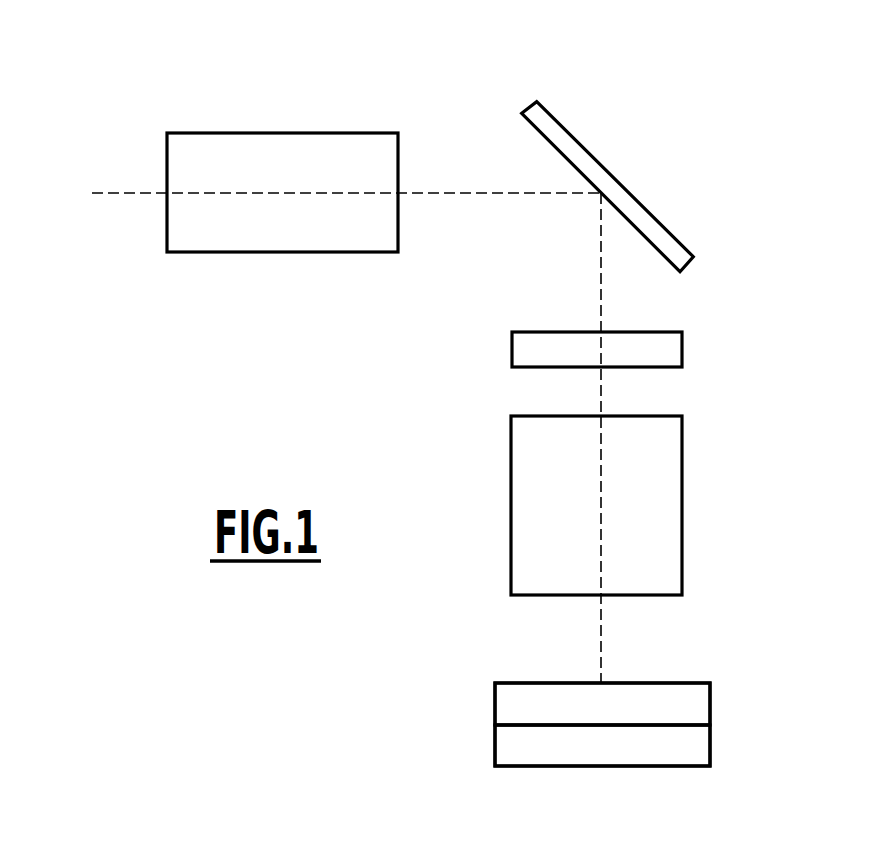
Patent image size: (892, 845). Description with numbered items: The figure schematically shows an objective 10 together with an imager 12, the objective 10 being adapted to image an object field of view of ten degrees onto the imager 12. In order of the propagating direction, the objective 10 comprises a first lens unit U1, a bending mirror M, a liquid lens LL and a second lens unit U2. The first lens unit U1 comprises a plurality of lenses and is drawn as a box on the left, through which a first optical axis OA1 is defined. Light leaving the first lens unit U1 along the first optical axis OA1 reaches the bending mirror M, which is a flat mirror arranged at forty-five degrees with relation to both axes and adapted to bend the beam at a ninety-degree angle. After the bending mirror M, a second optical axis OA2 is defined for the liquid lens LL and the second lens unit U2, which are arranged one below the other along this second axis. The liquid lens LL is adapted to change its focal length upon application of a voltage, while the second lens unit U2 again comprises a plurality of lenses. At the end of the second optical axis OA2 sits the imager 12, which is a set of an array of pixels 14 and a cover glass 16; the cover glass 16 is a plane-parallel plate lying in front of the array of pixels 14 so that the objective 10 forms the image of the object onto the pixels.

The objective 10 is at (115, 83).
The first optical axis OA1 is at (100, 193).
The first lens unit U1 is at (287, 158).
The bending mirror M is at (603, 192).
The second optical axis OA2 is at (603, 300).
The liquid lens LL is at (673, 347).
The second lens unit U2 is at (645, 516).
The imager 12 is at (720, 733).
The cover glass 16 is at (513, 708).
The array of pixels 14 is at (542, 750).